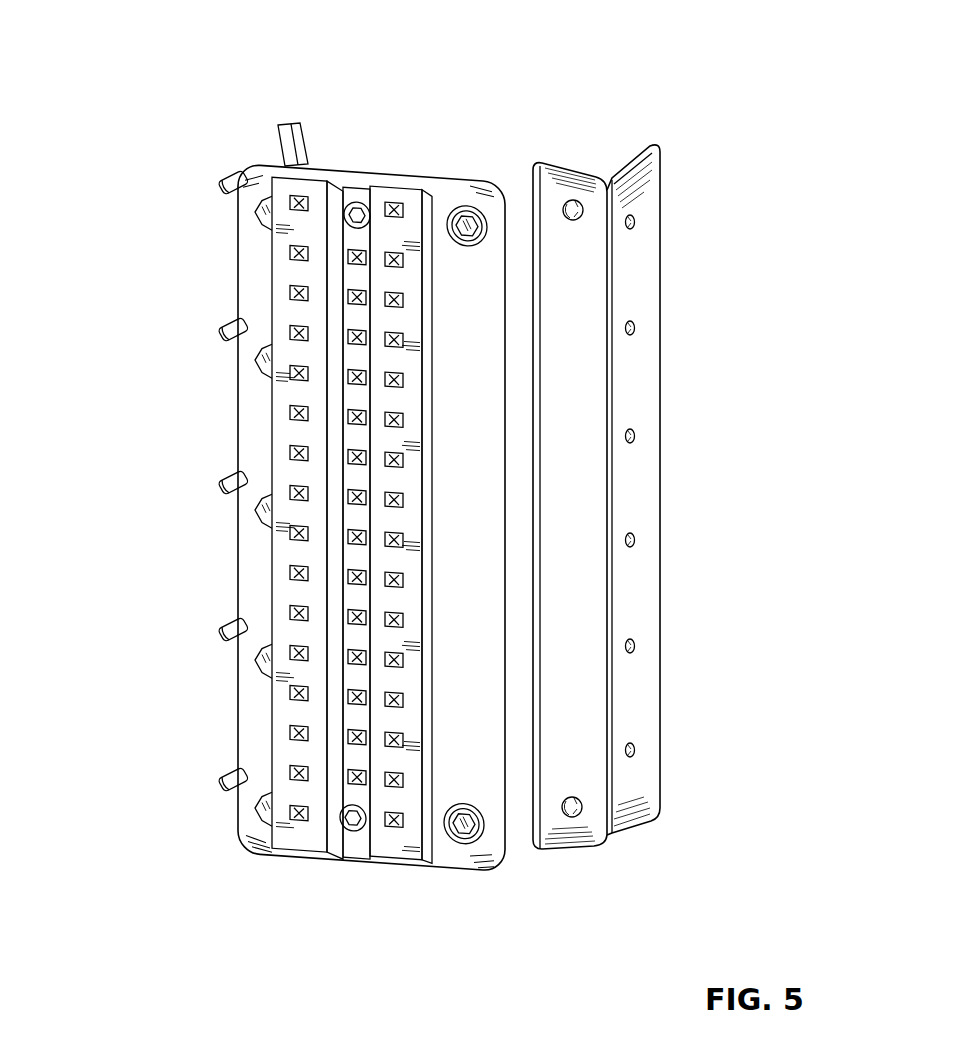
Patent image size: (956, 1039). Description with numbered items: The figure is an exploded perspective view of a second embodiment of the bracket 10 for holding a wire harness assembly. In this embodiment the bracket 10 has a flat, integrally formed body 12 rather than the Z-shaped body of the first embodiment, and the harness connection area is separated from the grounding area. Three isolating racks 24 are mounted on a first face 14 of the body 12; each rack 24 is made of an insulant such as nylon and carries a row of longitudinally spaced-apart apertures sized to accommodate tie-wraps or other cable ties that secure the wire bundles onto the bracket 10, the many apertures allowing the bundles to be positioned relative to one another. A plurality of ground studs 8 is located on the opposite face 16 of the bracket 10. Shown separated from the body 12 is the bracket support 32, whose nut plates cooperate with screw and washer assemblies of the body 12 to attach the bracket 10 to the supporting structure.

The ground studs 8 is at (247, 210).
The bracket 10 is at (587, 85).
The body 12 is at (257, 397).
The first face 14 is at (488, 512).
The opposite face 16 is at (462, 130).
The racks 24 is at (267, 562).
The bracket support 32 is at (635, 565).